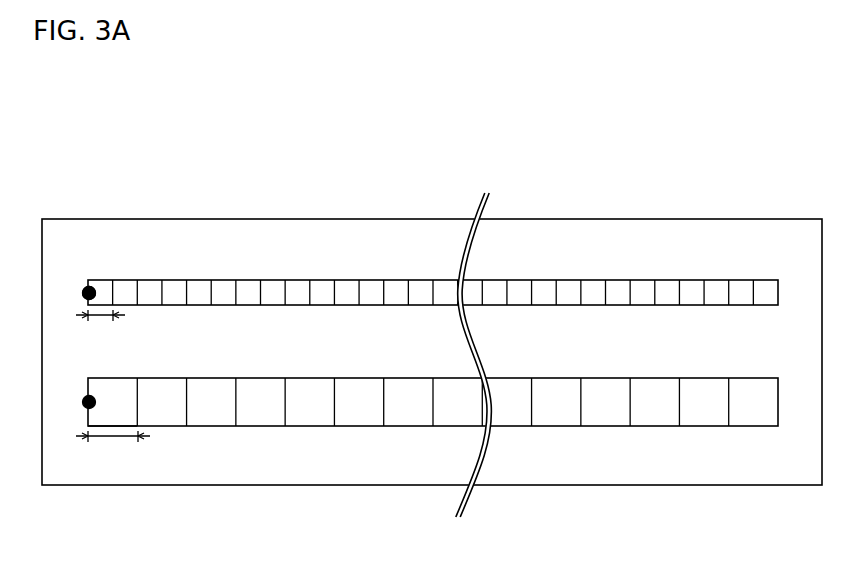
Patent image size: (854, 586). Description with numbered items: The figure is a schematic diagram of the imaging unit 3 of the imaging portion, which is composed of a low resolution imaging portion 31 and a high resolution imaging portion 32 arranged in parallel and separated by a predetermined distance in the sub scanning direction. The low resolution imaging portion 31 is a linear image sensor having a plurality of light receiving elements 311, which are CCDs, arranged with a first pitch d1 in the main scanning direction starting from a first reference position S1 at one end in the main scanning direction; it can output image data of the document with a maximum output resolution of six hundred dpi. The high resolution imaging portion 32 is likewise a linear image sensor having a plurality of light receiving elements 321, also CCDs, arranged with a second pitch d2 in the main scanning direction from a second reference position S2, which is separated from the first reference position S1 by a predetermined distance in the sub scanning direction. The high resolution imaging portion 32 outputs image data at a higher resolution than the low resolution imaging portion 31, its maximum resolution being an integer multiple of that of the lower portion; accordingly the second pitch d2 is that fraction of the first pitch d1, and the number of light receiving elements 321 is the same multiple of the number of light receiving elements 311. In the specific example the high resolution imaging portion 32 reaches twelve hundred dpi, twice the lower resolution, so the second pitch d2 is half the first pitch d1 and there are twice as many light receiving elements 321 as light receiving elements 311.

The imaging unit 3 is at (676, 200).
The low resolution imaging portion 31 is at (155, 447).
The light receiving element 311 is at (230, 426).
The high resolution imaging portion 32 is at (142, 275).
The light receiving element 321 is at (100, 279).
The first reference position S1 is at (74, 404).
The second reference position S2 is at (74, 295).
The first pitch d1 is at (113, 448).
The second pitch d2 is at (100, 327).